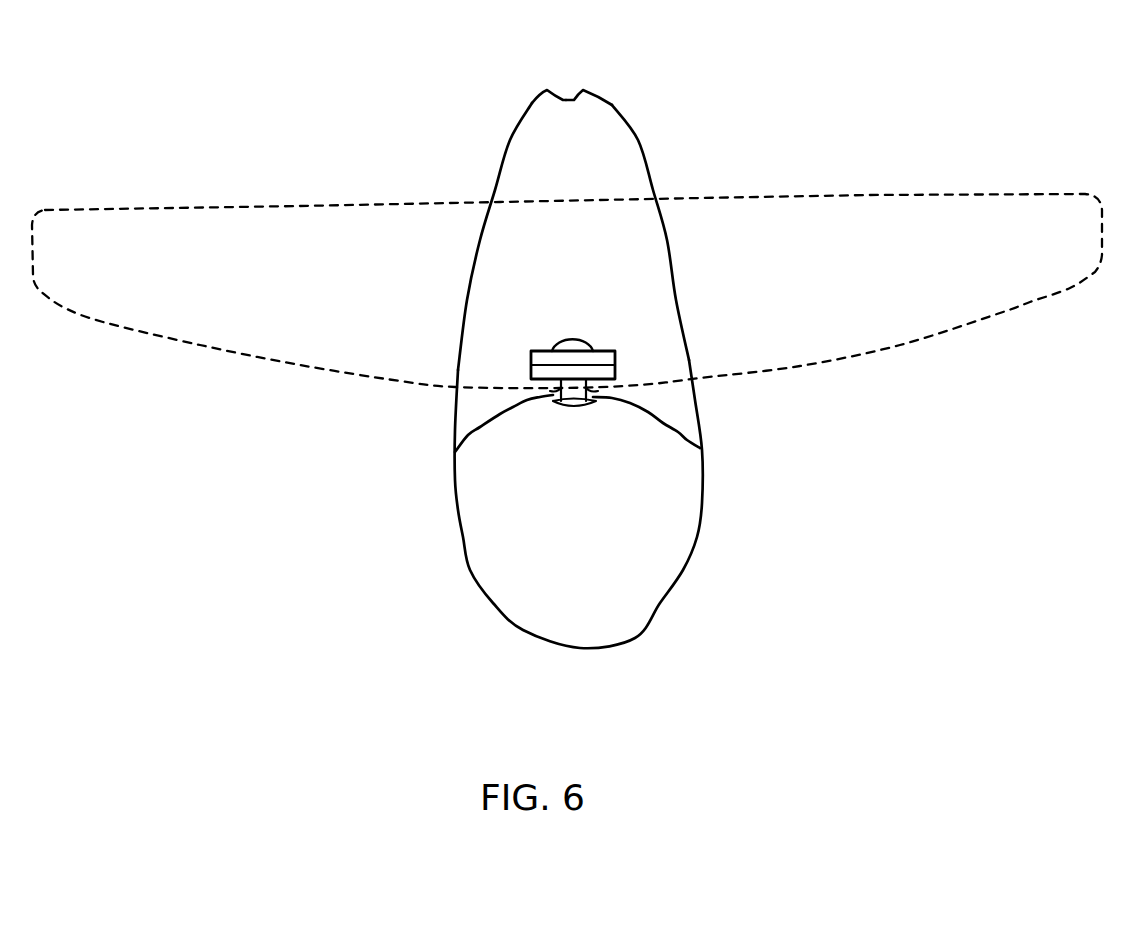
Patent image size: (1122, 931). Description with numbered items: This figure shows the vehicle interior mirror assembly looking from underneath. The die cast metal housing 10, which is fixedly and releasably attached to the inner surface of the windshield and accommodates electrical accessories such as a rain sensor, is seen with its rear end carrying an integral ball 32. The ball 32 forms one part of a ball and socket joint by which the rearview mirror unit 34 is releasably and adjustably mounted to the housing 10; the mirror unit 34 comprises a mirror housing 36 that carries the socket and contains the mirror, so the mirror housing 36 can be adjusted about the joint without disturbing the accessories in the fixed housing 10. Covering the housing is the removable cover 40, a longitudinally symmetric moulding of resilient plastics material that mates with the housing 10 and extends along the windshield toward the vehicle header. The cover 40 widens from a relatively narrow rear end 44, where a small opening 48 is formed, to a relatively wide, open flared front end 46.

The housing 10 is at (488, 548).
The ball 32 is at (585, 350).
The rearview mirror unit 34 is at (913, 183).
The mirror housing 36 is at (540, 357).
The removable cover 40 is at (637, 158).
The narrow rear end 44 is at (535, 100).
The flared front end 46 is at (632, 397).
The small opening 48 is at (567, 94).